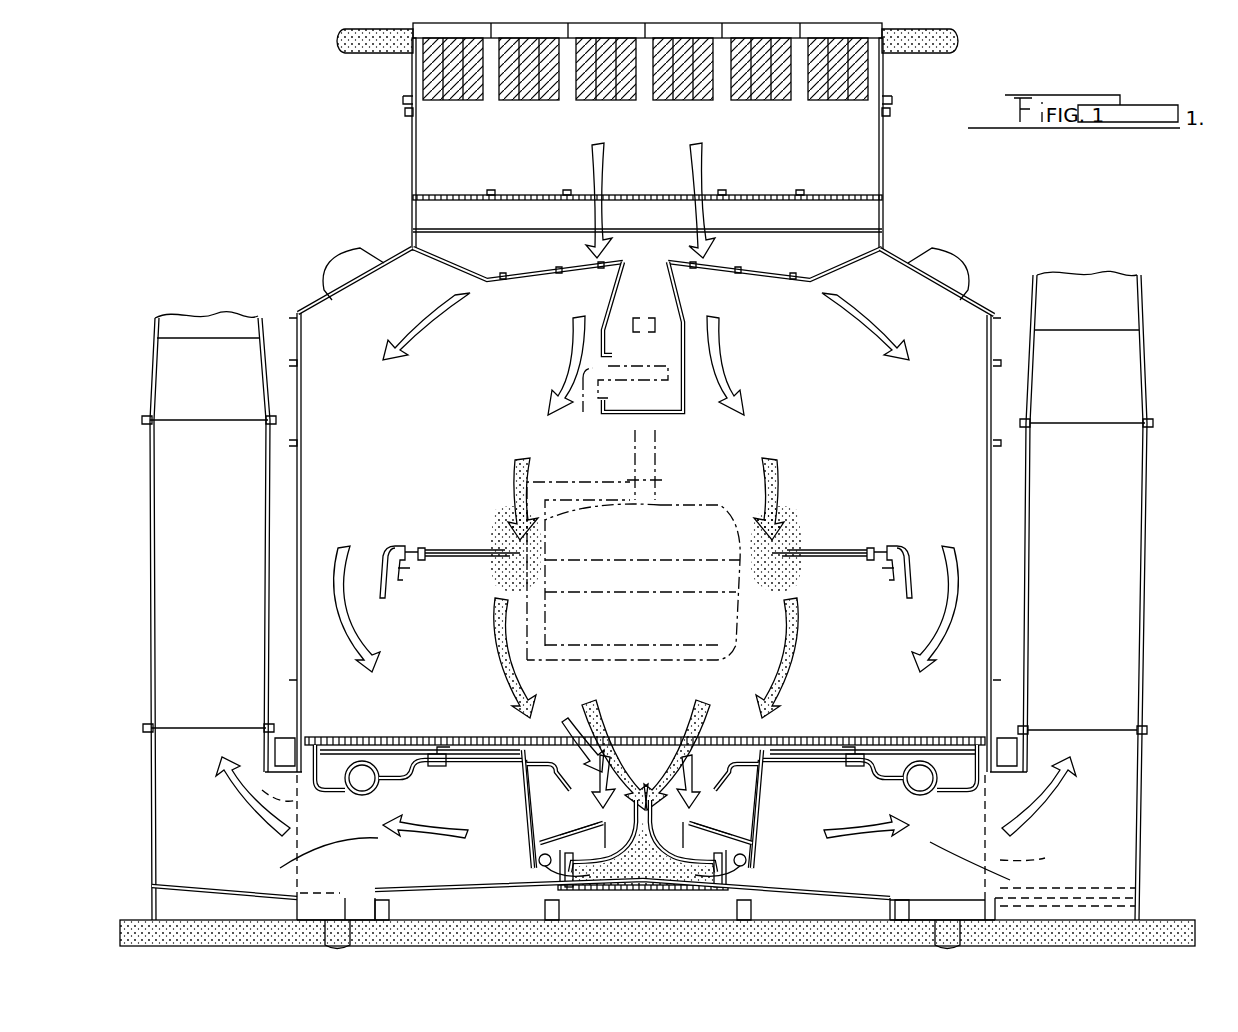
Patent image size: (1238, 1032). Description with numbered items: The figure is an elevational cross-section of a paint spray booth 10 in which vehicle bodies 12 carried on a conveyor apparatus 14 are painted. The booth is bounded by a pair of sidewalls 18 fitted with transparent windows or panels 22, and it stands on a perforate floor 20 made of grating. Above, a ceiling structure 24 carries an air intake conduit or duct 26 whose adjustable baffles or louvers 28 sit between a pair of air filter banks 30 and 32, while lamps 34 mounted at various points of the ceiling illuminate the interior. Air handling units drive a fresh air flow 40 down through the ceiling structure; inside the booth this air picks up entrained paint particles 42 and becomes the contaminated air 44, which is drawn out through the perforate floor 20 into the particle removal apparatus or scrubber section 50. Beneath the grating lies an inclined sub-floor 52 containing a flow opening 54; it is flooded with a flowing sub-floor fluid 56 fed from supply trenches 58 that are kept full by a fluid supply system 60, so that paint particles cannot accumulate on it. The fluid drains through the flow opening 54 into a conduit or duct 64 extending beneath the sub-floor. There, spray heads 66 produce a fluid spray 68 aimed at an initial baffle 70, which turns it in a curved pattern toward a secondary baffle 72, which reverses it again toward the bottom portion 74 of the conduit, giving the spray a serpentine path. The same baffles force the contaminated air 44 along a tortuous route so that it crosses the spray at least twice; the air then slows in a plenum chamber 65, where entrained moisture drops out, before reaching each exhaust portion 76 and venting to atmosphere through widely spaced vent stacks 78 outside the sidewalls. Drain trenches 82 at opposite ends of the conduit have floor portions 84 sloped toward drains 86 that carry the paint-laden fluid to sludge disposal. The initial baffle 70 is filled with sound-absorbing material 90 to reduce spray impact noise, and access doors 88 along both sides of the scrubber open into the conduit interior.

The paint spray booth 10 is at (652, 486).
The vehicle bodies 12 is at (673, 495).
The conveyor apparatus 14 is at (697, 311).
The sidewalls 18 is at (979, 384).
The perforate floor 20 is at (412, 736).
The transparent windows or panels 22 is at (988, 520).
The ceiling structure 24 is at (909, 243).
The air intake conduit or duct 26 is at (900, 153).
The adjustable baffles or louvers 28 is at (778, 190).
The air filter bank 30 is at (818, 112).
The air filter bank 32 is at (795, 265).
The lamps 34 is at (960, 258).
The air flow 40 is at (690, 152).
The entrained paint particles 42 is at (795, 560).
The contaminated air 44 is at (620, 710).
The particle removal apparatus or scrubber section 50 is at (571, 737).
The sub-floor 52 is at (858, 752).
The flow opening 54 is at (695, 740).
The sub-floor fluid 56 is at (762, 800).
The supply trenches 58 is at (975, 745).
The fluid supply system 60 is at (928, 802).
The conduit or duct 64 is at (456, 819).
The plenum chamber 65 is at (641, 864).
The spray heads 66 is at (735, 790).
The fluid spray 68 is at (643, 803).
The initial baffle 70 is at (643, 855).
The secondary baffle 72 is at (748, 858).
The bottom portion 74 is at (848, 892).
The exhaust portion 76 is at (260, 864).
The vent stacks 78 is at (1108, 602).
The drain trenches 82 is at (1000, 904).
The floor portions 84 is at (920, 898).
The drains 86 is at (945, 935).
The access doors 88 is at (692, 828).
The sound-absorbing material 90 is at (572, 875).